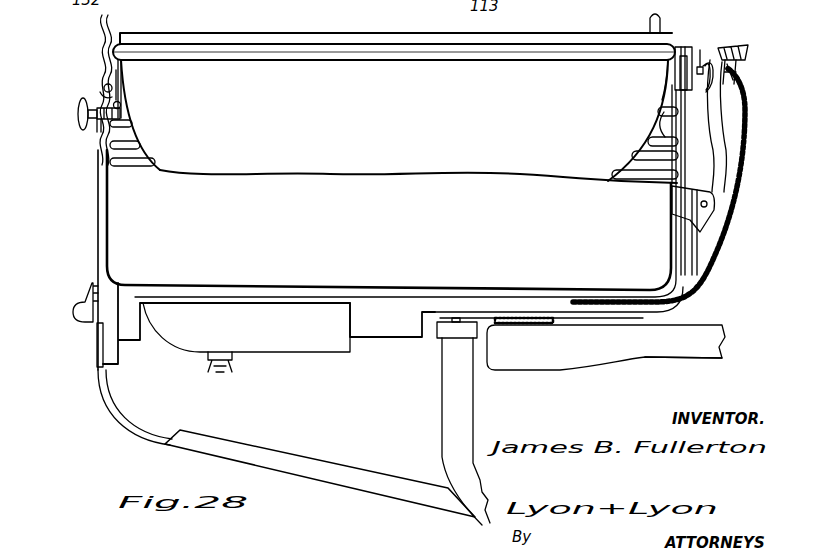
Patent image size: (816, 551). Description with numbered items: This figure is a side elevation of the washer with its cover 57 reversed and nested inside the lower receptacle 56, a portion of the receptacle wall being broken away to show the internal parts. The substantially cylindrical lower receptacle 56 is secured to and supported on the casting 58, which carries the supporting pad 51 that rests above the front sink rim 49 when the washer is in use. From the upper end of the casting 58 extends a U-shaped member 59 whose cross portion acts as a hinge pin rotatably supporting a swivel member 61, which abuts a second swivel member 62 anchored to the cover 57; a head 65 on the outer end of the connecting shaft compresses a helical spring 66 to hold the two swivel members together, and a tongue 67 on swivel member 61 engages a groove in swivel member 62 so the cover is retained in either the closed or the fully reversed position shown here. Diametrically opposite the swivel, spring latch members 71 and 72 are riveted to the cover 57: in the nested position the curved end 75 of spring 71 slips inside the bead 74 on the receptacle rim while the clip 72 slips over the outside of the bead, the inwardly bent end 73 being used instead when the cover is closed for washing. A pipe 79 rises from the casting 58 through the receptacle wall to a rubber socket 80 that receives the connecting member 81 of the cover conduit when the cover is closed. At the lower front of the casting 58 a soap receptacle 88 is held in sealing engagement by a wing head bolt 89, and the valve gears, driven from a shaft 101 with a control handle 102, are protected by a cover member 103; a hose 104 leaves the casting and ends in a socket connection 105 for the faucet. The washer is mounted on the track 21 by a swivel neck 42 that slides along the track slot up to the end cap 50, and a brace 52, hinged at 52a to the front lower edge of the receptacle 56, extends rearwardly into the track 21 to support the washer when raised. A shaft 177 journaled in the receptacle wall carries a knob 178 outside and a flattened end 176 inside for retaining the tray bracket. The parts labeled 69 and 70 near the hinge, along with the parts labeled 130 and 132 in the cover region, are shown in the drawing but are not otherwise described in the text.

The track 21 is at (436, 424).
The swivel neck 42 is at (468, 318).
The sink rim 49 is at (528, 366).
The end cap 50 is at (452, 330).
The supporting pad 51 is at (540, 326).
The brace 52 is at (335, 468).
The hinge 52a is at (98, 372).
The lower receptacle 56 is at (125, 222).
The cover 57 is at (276, 27).
The casting 58 is at (392, 330).
The U-shaped member 59 is at (686, 110).
The swivel member 61 is at (687, 55).
The swivel member 62 is at (672, 72).
The head 65 is at (709, 64).
The helical spring 66 is at (701, 58).
The tongue 67 is at (678, 46).
The lever 69 is at (727, 128).
The handle 70 is at (745, 54).
The spring latch member 71 is at (121, 78).
The spring latch member 72 is at (106, 86).
The inwardly bent end 73 is at (101, 44).
The bead 74 is at (102, 94).
The curved end 75 is at (121, 104).
The pipe 79 is at (670, 190).
The rubber socket 80 is at (662, 120).
The connecting member 81 is at (650, 22).
The soap receptacle 88 is at (318, 345).
The wing head bolt 89 is at (220, 376).
The shaft 101 is at (92, 330).
The control handle 102 is at (78, 306).
The cover member 103 is at (112, 353).
The hose 104 is at (748, 165).
The socket connection 105 is at (738, 73).
The rail 130 is at (394, 32).
The rail strip 132 is at (394, 27).
The flattened end 176 is at (121, 116).
The shaft 177 is at (97, 126).
The knob 178 is at (78, 114).